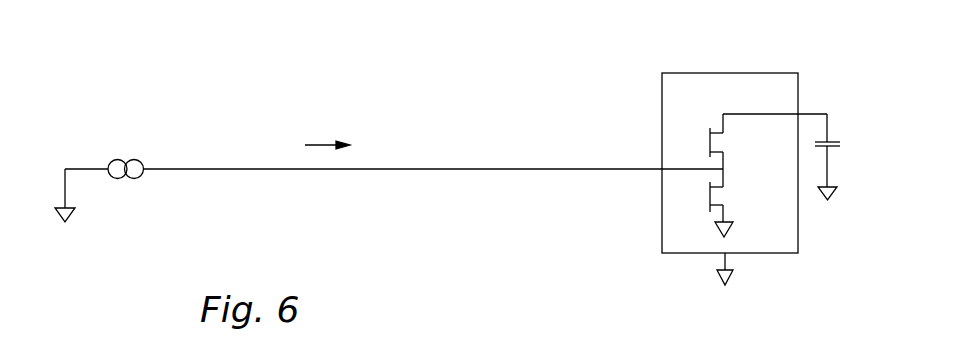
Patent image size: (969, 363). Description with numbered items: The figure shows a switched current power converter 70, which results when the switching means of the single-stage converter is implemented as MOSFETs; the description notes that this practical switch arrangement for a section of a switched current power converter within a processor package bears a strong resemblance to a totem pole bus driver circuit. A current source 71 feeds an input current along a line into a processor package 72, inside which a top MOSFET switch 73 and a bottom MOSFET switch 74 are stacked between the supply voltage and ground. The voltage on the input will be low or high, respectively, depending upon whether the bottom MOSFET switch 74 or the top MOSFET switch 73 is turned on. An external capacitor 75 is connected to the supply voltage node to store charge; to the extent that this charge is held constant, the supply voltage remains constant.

The switched current power converter 70 is at (242, 50).
The current source 71 is at (128, 145).
The integrated circuit / microprocessor 72 is at (675, 62).
The top MOSFET switch 73 is at (688, 127).
The bottom MOSFET switch 74 is at (690, 194).
The external capacitor 75 is at (847, 128).